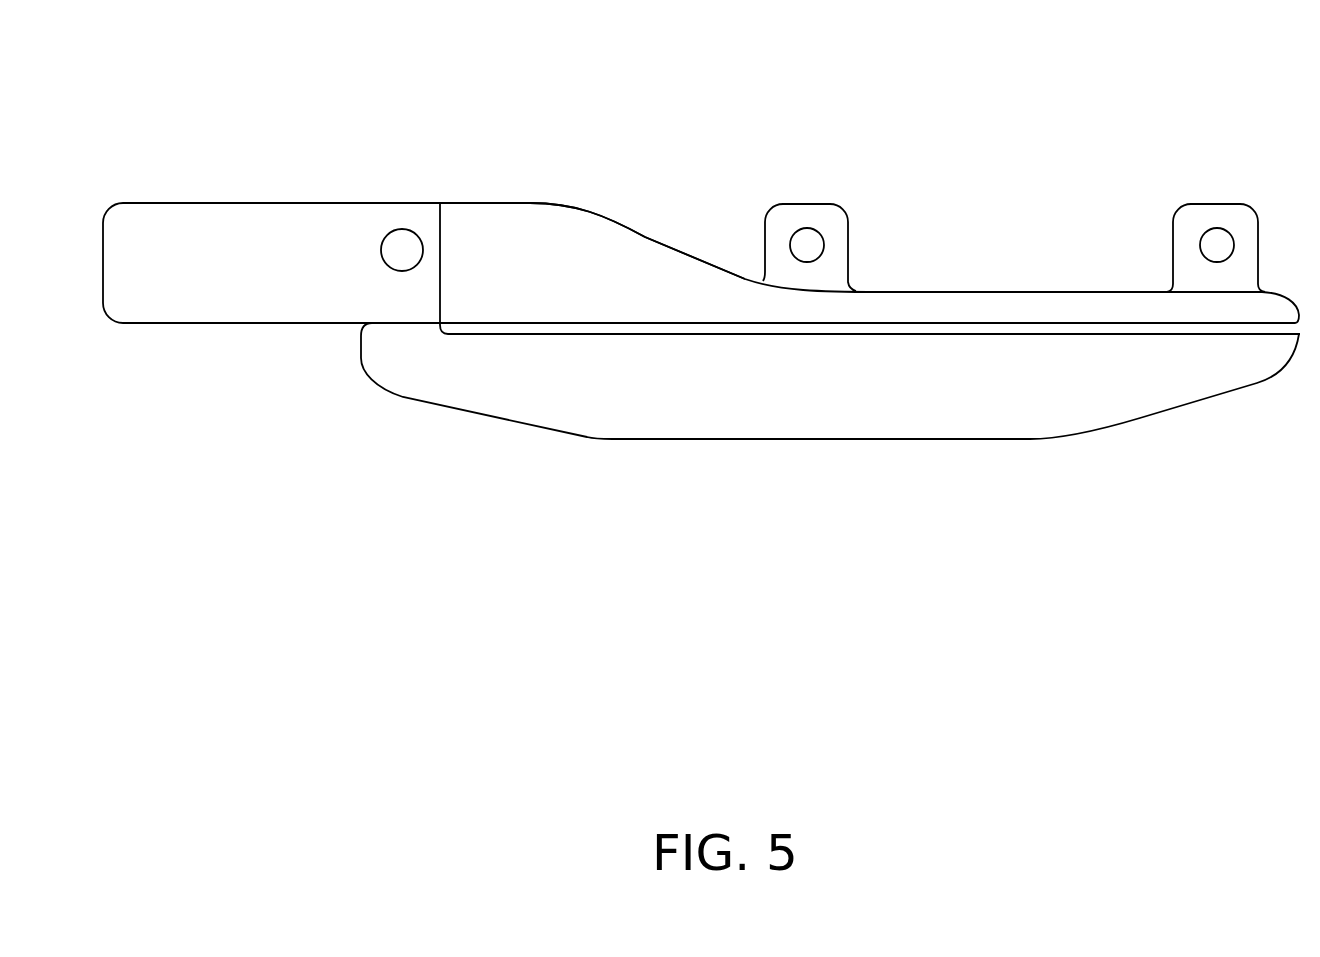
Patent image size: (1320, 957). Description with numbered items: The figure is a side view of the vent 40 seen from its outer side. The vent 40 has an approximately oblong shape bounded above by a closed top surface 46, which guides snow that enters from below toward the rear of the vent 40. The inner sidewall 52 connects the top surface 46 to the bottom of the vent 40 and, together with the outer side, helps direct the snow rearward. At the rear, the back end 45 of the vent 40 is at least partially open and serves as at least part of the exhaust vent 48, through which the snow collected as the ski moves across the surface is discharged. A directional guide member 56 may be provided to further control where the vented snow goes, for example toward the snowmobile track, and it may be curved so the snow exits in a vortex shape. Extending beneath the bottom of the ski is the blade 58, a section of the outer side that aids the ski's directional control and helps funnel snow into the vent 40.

The vent 40 is at (425, 510).
The back end 45 is at (409, 131).
The top surface 46 is at (637, 225).
The exhaust vent 48 is at (420, 210).
The inner sidewall 52 is at (995, 292).
The directional guide member 56 is at (167, 308).
The blade 58 is at (822, 438).